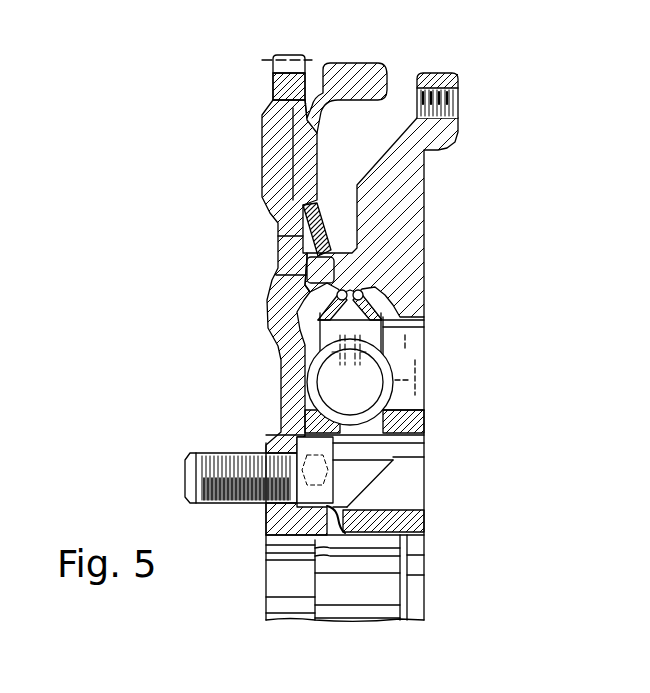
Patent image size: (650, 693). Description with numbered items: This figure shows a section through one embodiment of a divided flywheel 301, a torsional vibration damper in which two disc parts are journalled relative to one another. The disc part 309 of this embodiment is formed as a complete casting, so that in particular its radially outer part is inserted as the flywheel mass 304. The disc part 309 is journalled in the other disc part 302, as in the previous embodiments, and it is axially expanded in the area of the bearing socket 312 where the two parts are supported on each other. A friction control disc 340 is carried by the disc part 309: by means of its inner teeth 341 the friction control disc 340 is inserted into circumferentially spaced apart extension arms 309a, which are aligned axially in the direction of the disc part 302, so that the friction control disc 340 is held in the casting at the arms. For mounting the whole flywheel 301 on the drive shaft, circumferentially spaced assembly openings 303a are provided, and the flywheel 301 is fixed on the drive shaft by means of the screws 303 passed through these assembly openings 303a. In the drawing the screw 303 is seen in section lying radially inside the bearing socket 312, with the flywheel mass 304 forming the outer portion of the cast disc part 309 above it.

The divided flywheel 301 is at (495, 52).
The disc part 302 is at (272, 151).
The screws 303 is at (232, 467).
The assembly openings 303a is at (400, 495).
The flywheel mass 304 is at (407, 183).
The disc part 309 is at (405, 268).
The extension arms 309a is at (378, 290).
The bearing socket 312 is at (420, 538).
The friction control disc 340 is at (292, 227).
The inner teeth 341 is at (292, 292).